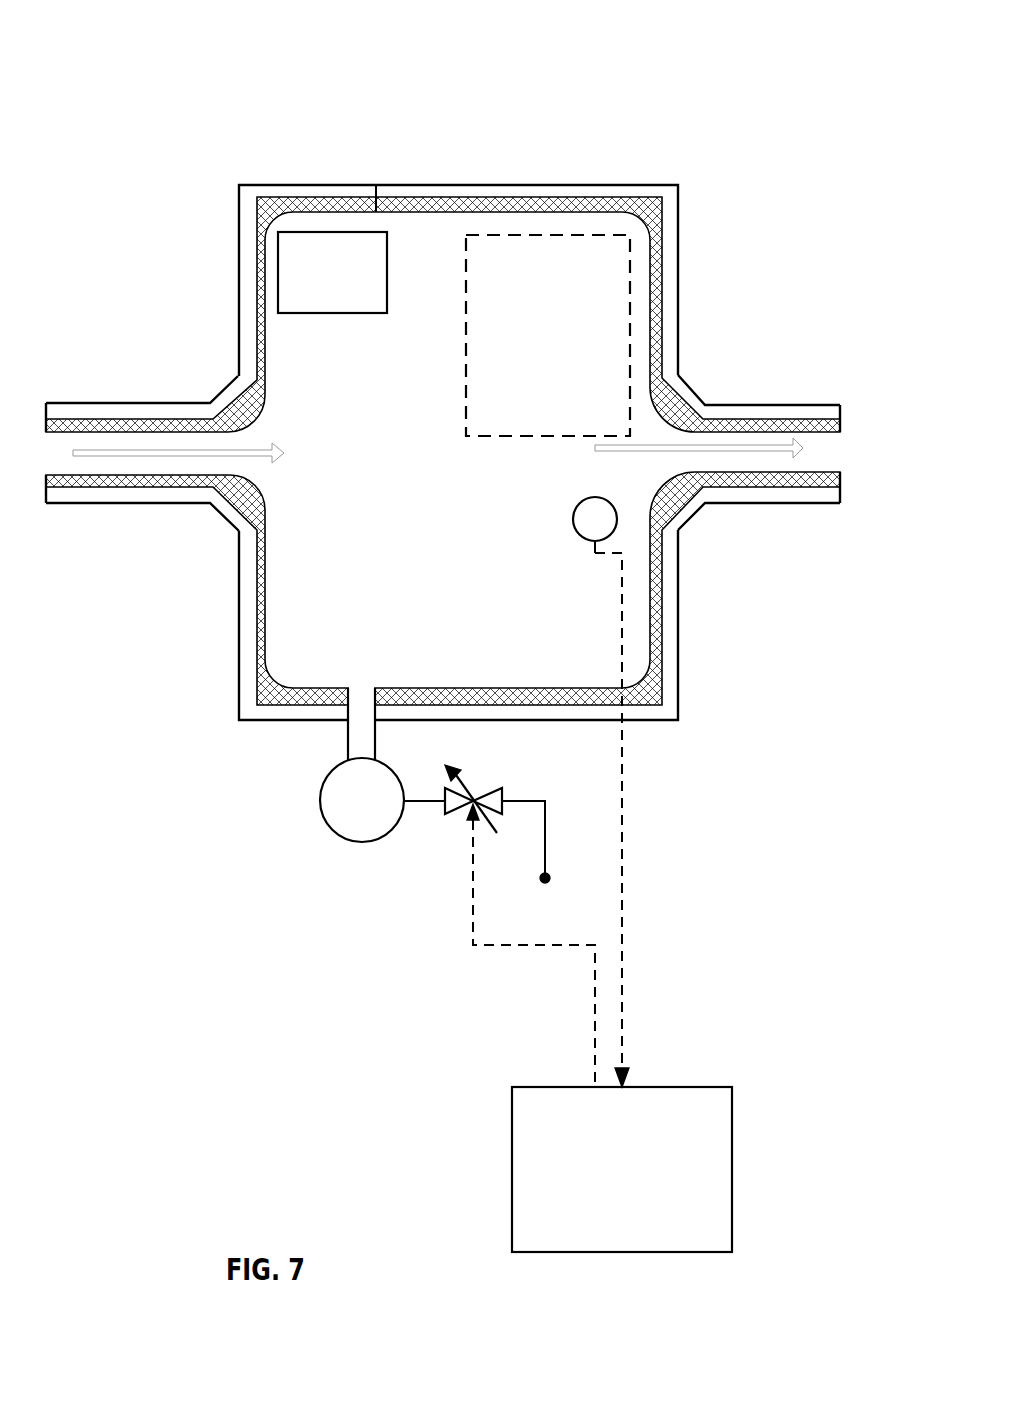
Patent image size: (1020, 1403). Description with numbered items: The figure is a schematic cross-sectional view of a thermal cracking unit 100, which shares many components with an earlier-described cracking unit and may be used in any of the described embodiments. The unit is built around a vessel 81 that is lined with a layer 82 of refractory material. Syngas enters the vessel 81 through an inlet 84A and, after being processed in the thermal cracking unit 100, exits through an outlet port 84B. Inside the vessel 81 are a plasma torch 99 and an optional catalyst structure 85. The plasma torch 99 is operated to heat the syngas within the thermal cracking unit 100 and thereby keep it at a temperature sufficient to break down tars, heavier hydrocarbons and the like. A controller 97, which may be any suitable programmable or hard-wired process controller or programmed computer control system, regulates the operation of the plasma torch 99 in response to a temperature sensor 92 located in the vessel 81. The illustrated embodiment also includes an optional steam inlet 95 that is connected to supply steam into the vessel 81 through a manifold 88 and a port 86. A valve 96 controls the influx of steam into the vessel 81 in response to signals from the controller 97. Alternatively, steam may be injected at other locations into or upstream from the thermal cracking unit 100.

The thermal cracking unit 100 is at (154, 52).
The vessel 81 is at (491, 186).
The layer of refractory material 82 is at (565, 200).
The inlet 84A is at (249, 437).
The outlet port 84B is at (682, 437).
The catalyst structure 85 is at (467, 340).
The port 86 is at (362, 692).
The manifold 88 is at (385, 769).
The temperature sensor 92 is at (594, 497).
The steam inlet 95 is at (547, 803).
The valve 96 is at (494, 791).
The controller 97 is at (666, 1087).
The plasma torch 99 is at (335, 313).